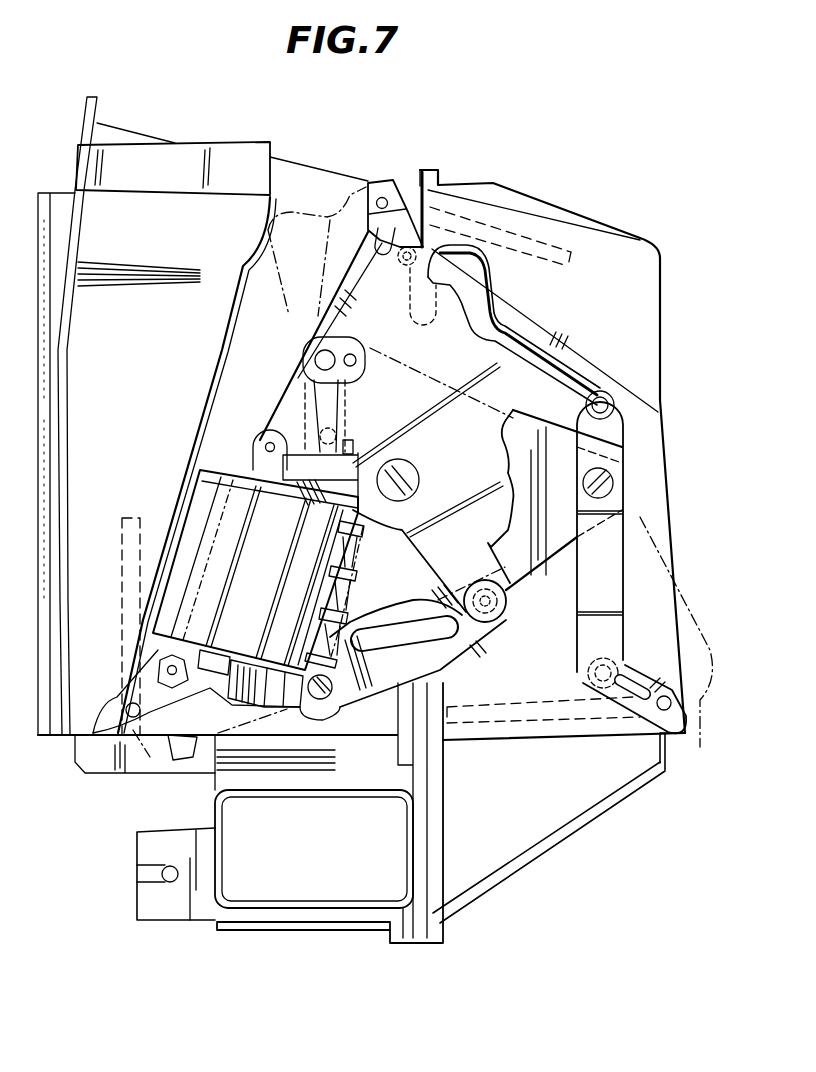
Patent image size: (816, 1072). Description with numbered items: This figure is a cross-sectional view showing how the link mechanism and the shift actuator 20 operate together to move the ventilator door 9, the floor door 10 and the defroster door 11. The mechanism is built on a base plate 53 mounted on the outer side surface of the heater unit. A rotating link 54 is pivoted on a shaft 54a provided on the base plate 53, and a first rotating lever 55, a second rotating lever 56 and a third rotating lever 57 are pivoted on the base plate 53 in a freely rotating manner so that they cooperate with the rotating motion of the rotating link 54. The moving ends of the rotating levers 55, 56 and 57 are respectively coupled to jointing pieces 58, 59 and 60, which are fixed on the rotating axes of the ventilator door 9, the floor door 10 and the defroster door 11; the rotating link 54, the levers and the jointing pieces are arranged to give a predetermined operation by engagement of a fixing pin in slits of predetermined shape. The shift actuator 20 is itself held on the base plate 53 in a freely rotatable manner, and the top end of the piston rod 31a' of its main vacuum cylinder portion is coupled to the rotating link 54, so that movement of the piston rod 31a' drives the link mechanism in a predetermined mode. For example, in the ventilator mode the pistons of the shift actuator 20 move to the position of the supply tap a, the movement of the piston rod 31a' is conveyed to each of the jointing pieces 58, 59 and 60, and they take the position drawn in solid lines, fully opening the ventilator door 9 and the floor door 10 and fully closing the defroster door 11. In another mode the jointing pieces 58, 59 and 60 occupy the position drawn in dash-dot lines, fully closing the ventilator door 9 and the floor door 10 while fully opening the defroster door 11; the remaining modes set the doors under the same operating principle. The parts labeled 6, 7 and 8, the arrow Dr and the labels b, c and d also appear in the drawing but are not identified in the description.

The door inner panel 6 is at (74, 214).
The bracket 7 is at (150, 853).
The reinforcing member 8 is at (197, 160).
The ventilator door 9 is at (520, 231).
The floor door 10 is at (543, 722).
The defroster door 11 is at (121, 562).
The shift actuator 20 is at (193, 493).
The piston rod 31a' is at (290, 453).
The base plate 53 is at (550, 545).
The rotating link 54 is at (575, 353).
The shaft 54a is at (408, 474).
The first rotating lever 55 is at (343, 313).
The second rotating lever 56 is at (593, 637).
The third rotating lever 57 is at (443, 665).
The jointing piece 58 is at (375, 192).
The jointing piece 59 is at (686, 722).
The jointing piece 60 is at (160, 745).
The direction arrow Dr is at (557, 243).
The supply tap a is at (333, 686).
The terminal b is at (346, 616).
The terminal c is at (358, 575).
The terminal d is at (367, 532).